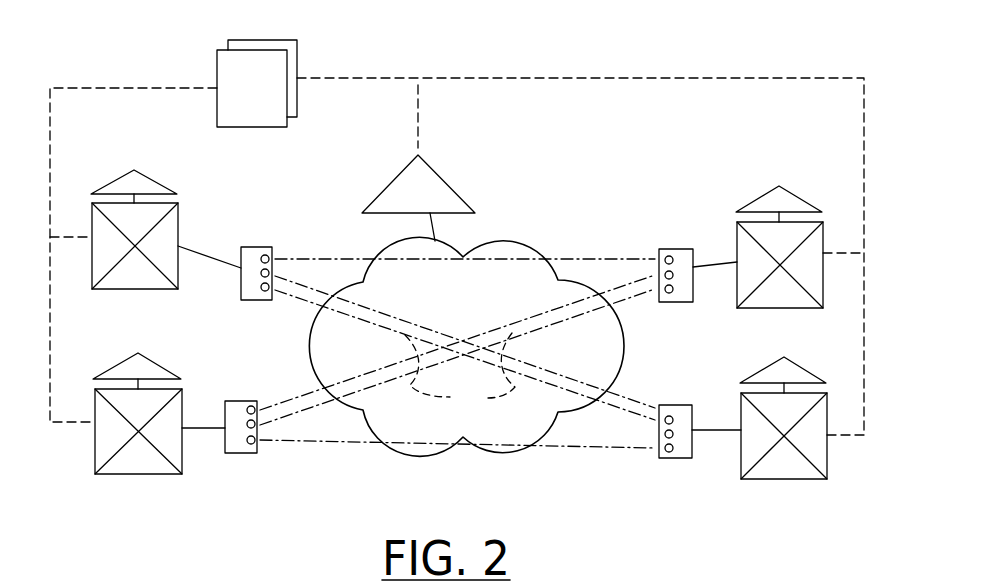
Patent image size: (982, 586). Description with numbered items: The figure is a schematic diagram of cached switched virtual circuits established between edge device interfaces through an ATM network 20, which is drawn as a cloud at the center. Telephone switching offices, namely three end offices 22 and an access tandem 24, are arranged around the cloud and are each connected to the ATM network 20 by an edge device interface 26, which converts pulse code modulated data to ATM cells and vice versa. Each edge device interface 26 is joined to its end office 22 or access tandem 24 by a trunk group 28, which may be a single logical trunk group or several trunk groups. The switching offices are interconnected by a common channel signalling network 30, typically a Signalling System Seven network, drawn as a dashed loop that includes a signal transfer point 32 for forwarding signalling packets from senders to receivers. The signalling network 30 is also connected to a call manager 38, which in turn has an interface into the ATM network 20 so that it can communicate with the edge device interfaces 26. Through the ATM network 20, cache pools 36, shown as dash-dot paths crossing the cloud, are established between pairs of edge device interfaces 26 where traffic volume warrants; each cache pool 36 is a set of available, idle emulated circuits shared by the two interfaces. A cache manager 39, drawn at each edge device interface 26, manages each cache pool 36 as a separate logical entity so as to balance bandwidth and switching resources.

The ATM network 20 is at (512, 240).
The end office 22 is at (170, 232).
The access tandem 24 is at (790, 295).
The edge device interface 26 is at (258, 247).
The trunk group 28 is at (210, 250).
The common channel signalling network 30 is at (555, 78).
The signal transfer point 32 is at (283, 38).
The cache pool 36 is at (575, 480).
The call manager 38 is at (437, 178).
The cache manager 39 is at (265, 300).